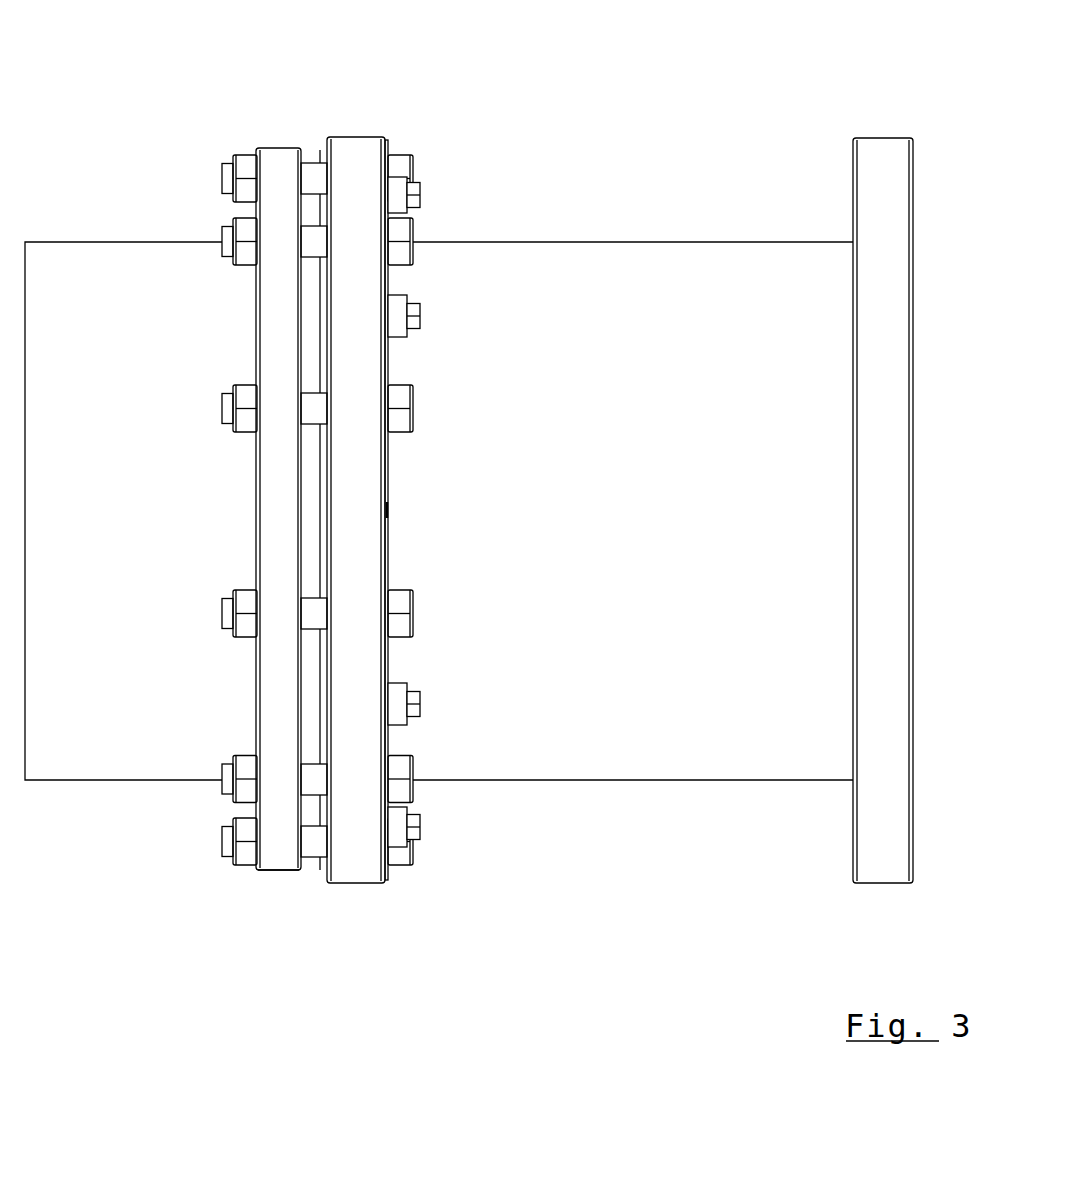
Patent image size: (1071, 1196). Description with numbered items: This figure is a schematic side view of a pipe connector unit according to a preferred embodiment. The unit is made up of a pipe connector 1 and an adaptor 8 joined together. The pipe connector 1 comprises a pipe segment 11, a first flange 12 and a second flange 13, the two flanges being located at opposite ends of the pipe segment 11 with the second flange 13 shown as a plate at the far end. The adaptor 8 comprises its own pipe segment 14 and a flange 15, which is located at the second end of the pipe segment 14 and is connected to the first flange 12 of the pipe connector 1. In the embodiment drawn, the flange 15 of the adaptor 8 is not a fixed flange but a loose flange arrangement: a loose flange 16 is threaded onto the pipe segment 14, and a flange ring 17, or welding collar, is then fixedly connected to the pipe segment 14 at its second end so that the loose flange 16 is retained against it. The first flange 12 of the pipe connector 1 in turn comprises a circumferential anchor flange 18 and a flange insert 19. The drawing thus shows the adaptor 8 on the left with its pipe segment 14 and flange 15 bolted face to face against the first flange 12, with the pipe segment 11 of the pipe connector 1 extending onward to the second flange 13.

The pipe connector 1 is at (601, 90).
The adaptor 8 is at (109, 108).
The pipe segment 11 is at (616, 264).
The first flange 12 is at (357, 128).
The second flange 13 is at (892, 158).
The pipe segment 14 is at (146, 264).
The flange 15 is at (263, 139).
The loose flange 16 is at (277, 855).
The flange ring 17 is at (305, 810).
The circumferential anchor flange 18 is at (370, 873).
The flange insert 19 is at (318, 818).